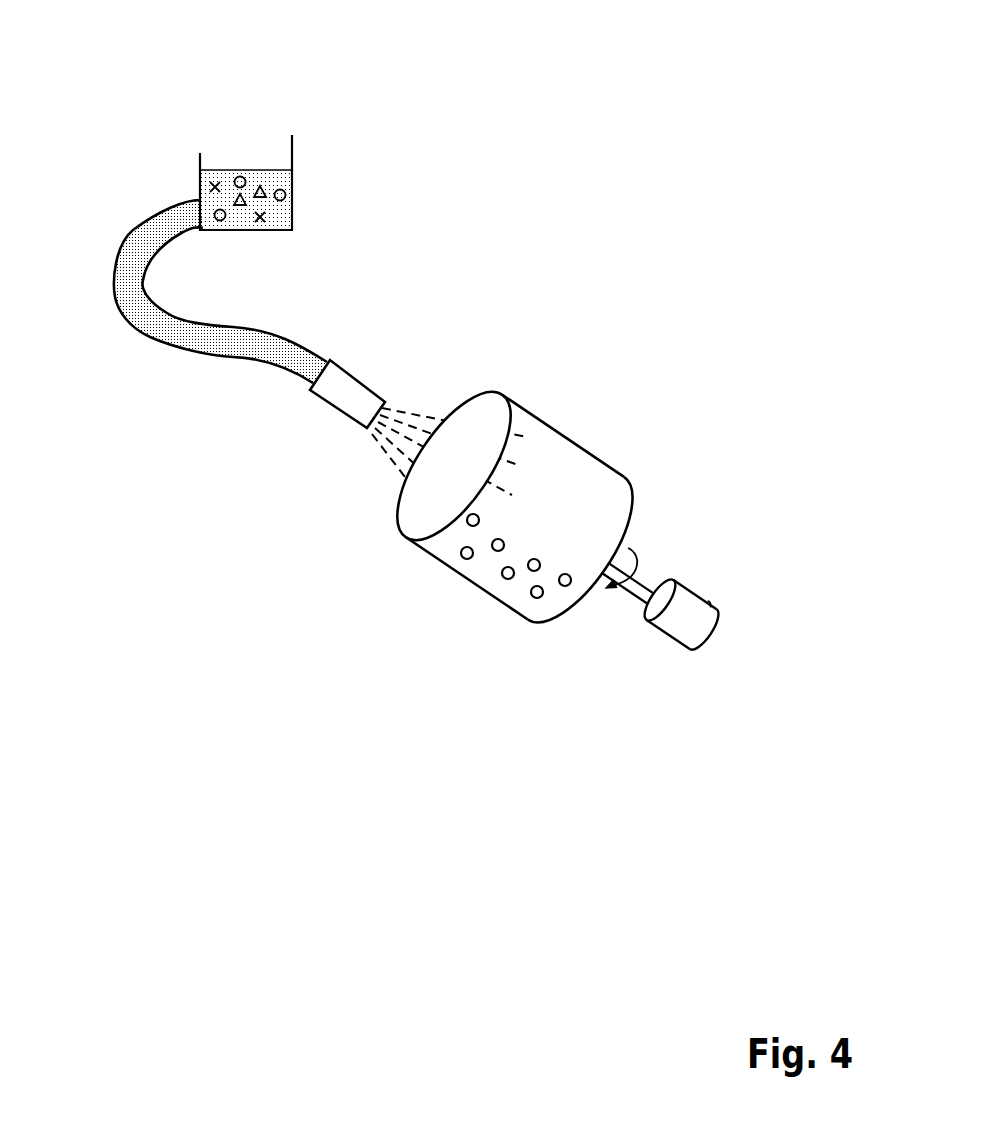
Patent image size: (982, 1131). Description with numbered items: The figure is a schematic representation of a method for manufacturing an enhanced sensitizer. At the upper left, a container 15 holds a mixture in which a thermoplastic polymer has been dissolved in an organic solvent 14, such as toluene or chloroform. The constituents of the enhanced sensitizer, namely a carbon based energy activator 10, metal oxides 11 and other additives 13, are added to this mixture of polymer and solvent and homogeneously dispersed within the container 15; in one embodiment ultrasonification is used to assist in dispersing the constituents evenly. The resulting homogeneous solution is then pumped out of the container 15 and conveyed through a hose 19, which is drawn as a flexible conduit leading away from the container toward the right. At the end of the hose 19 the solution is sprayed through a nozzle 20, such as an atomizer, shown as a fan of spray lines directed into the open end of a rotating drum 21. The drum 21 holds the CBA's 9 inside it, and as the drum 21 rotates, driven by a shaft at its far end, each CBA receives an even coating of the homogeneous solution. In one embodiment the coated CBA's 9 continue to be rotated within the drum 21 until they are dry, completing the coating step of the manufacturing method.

The CBA's 9 is at (490, 592).
The carbon based energy activator 10 is at (303, 176).
The metal oxides 11 is at (275, 162).
The other additives 13 is at (303, 210).
The organic solvent 14 is at (186, 195).
The container 15 is at (207, 140).
The hose 19 is at (308, 327).
The nozzle 20 is at (386, 376).
The rotating drum 21 is at (606, 442).